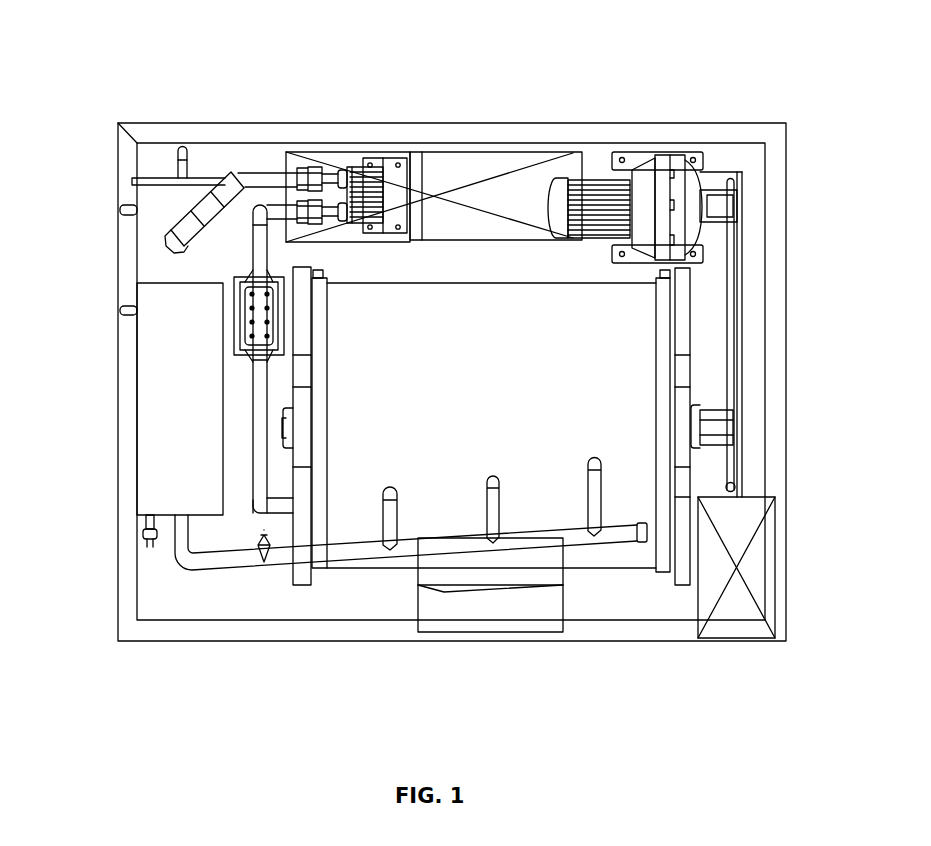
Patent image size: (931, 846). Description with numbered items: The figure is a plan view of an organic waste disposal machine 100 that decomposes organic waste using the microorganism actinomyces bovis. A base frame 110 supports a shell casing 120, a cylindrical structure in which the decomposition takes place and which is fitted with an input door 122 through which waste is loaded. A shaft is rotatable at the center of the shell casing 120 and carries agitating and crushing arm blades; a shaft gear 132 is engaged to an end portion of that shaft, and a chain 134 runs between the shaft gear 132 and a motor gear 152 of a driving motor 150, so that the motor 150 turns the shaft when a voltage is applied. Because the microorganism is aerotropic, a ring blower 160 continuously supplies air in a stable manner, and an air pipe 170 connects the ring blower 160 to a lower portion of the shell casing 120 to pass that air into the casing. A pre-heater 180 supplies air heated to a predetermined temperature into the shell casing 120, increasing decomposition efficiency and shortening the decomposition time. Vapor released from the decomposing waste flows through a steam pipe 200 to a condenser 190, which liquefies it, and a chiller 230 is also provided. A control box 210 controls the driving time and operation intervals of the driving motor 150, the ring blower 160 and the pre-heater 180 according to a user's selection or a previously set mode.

The organic waste disposal machine 100 is at (519, 80).
The base frame 110 is at (157, 597).
The shell casing 120 is at (512, 407).
The input door 122 is at (444, 592).
The shaft gear 132 is at (733, 460).
The chain 134 is at (737, 300).
The driving motor 150 is at (677, 167).
The motor gear 152 is at (732, 187).
The ring blower 160 is at (363, 175).
The air pipe 170 is at (262, 470).
The pre-heater 180 is at (245, 297).
The condenser 190 is at (157, 380).
The steam pipe 200 is at (612, 537).
The control box 210 is at (750, 565).
The chiller 230 is at (465, 165).